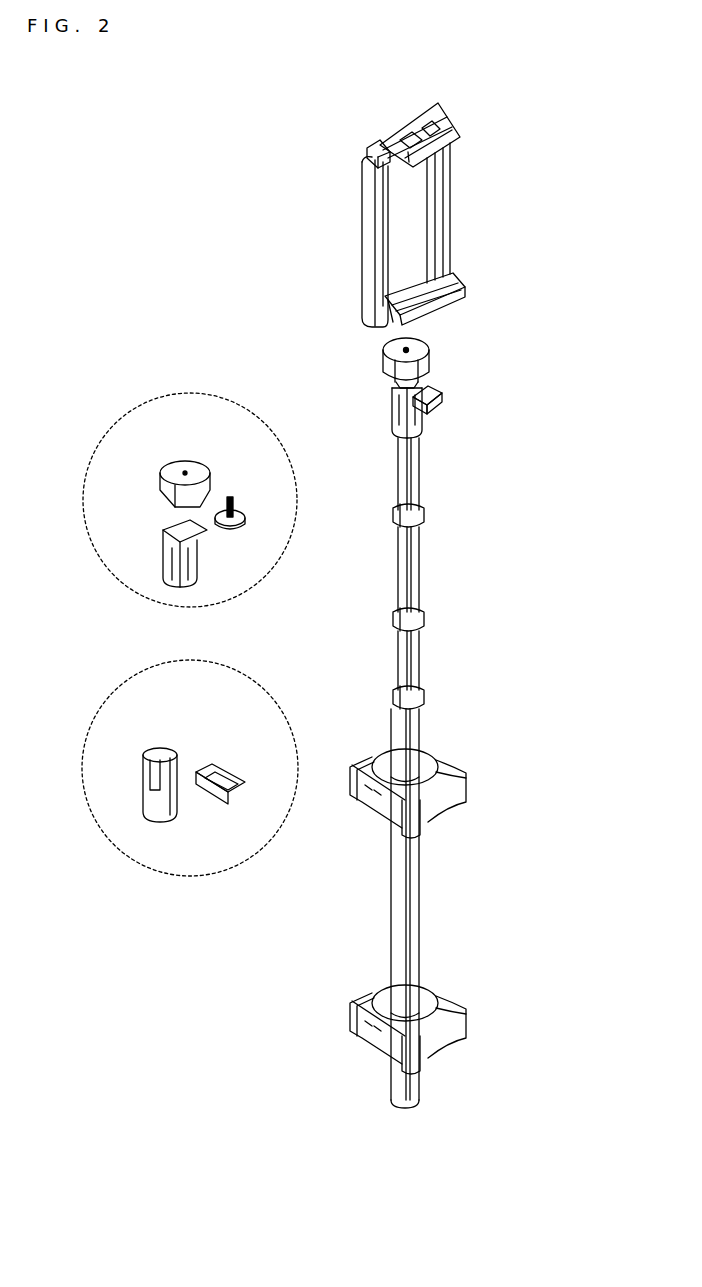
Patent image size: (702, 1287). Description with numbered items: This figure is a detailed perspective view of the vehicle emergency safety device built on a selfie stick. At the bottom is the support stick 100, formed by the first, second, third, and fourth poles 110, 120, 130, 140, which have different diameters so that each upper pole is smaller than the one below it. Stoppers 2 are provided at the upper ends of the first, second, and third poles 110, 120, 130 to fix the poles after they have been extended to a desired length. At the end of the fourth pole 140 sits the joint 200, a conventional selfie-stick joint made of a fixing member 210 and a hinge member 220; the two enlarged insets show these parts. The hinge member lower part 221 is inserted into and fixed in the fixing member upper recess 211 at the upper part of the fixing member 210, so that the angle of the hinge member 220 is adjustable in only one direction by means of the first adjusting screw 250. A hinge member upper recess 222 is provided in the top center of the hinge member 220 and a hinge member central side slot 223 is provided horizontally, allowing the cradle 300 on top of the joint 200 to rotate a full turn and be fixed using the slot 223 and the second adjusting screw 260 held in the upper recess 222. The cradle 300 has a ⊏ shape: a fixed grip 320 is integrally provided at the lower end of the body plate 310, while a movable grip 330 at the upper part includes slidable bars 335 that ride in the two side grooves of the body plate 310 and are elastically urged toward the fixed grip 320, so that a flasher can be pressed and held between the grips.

The support stick 100 is at (470, 773).
The first pole 110 is at (420, 850).
The second pole 120 is at (420, 662).
The third pole 130 is at (420, 577).
The fourth pole 140 is at (418, 487).
The stopper 2 is at (392, 518).
The joint 200 is at (325, 580).
The fixing member 210 is at (402, 430).
The fixing member upper recess 211 is at (145, 758).
The hinge member 220 is at (387, 373).
The hinge member lower part 221 is at (170, 578).
The hinge member upper recess 222 is at (168, 474).
The hinge member central side slot 223 is at (210, 490).
The first adjusting screw 250 is at (442, 408).
The second adjusting screw 260 is at (430, 360).
The cradle 300 is at (447, 215).
The body plate 310 is at (451, 240).
The fixed grip 320 is at (465, 302).
The movable grip 330 is at (452, 108).
The slidable bars 335 is at (365, 155).